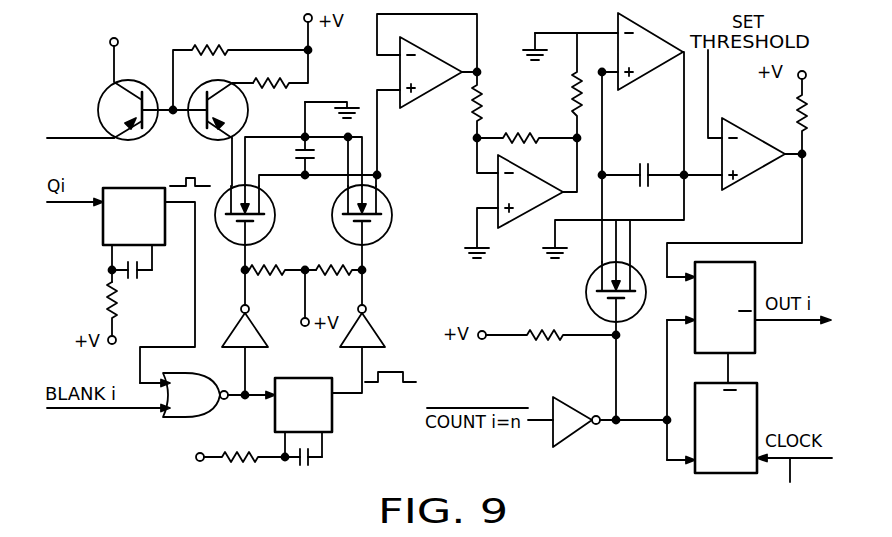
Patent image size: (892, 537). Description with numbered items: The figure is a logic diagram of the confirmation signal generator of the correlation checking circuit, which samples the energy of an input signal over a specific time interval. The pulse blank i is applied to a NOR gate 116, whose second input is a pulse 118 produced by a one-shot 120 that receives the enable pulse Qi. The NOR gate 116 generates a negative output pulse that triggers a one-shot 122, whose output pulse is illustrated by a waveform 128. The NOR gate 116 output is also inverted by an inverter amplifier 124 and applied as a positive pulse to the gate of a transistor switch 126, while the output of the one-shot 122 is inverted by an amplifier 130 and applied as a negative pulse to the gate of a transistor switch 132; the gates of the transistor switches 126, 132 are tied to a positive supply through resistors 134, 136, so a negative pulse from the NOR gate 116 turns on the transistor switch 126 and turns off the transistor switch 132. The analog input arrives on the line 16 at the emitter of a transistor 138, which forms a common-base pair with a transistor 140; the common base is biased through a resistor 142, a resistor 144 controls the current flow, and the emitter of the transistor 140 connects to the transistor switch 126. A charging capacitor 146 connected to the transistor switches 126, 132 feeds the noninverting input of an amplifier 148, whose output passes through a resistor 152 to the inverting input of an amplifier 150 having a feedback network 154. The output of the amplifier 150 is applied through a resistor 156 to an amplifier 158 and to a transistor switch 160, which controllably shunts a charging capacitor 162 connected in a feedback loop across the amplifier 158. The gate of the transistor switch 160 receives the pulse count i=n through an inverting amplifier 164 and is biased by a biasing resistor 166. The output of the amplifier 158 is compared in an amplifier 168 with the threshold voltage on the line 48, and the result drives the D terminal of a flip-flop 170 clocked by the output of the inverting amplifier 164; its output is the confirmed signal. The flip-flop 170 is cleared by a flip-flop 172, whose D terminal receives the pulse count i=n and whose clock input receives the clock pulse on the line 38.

The line 16 is at (78, 136).
The line 38 is at (794, 482).
The line 48 is at (708, 87).
The NOR gate 116 is at (181, 410).
The pulse 118 is at (183, 181).
The one-shot 120 is at (103, 224).
The one-shot 122 is at (322, 412).
The inverter amplifier 124 is at (235, 333).
The transistor switch 126 is at (263, 230).
The waveform 128 is at (391, 370).
The amplifier 130 is at (368, 333).
The transistor switch 132 is at (380, 230).
The resistor 134 is at (296, 275).
The resistor 136 is at (353, 275).
The transistor 138 is at (136, 134).
The transistor 140 is at (236, 108).
The resistor 142 is at (213, 46).
The resistor 144 is at (279, 81).
The charging capacitor 146 is at (296, 154).
The amplifier 148 is at (398, 70).
The amplifier 150 is at (510, 187).
The resistor 152 is at (485, 100).
The feedback network 154 is at (505, 133).
The resistor 156 is at (573, 103).
The amplifier 158 is at (616, 44).
The transistor switch 160 is at (586, 292).
The charging capacitor 162 is at (645, 150).
The inverting amplifier 164 is at (568, 425).
The biasing resistor 166 is at (545, 341).
The amplifier 168 is at (744, 144).
The flip-flop 170 is at (737, 282).
The flip-flop 172 is at (745, 400).